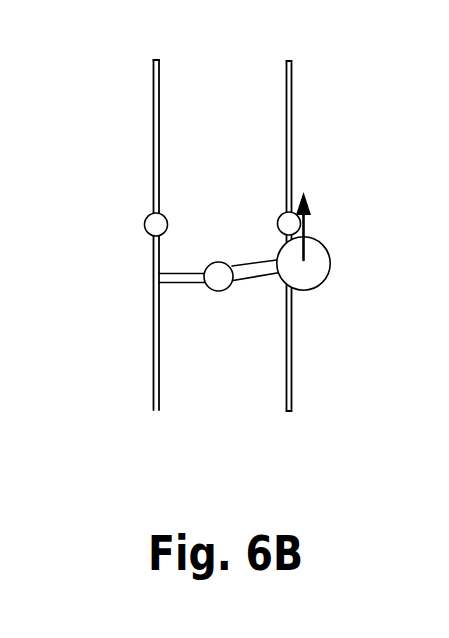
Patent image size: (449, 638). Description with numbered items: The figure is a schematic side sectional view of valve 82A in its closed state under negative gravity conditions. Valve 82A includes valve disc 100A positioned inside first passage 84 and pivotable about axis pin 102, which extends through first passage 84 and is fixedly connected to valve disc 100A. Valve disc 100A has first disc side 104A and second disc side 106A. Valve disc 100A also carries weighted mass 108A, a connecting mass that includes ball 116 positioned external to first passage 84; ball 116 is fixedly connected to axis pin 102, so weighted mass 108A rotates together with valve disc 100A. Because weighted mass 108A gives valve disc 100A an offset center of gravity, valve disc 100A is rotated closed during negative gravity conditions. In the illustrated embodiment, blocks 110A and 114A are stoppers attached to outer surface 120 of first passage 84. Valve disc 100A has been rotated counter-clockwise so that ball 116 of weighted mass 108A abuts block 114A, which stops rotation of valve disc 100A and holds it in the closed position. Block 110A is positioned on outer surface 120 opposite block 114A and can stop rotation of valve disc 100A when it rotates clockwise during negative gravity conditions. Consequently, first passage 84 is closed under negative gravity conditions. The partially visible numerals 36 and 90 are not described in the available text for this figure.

The bag mounting assembly 36 is at (9, 149).
The valve 82A is at (136, 287).
The first passage 84 is at (135, 119).
The upper end of first arm 90 is at (157, 60).
The valve disc 100A is at (274, 302).
The axis pin 102 is at (219, 292).
The first disc side 104A is at (183, 285).
The second disc side 106A is at (258, 280).
The weighted mass 108A is at (338, 296).
The block 110A is at (147, 216).
The block 114A is at (280, 214).
The ball 116 is at (330, 252).
The outer surface 120 is at (292, 97).